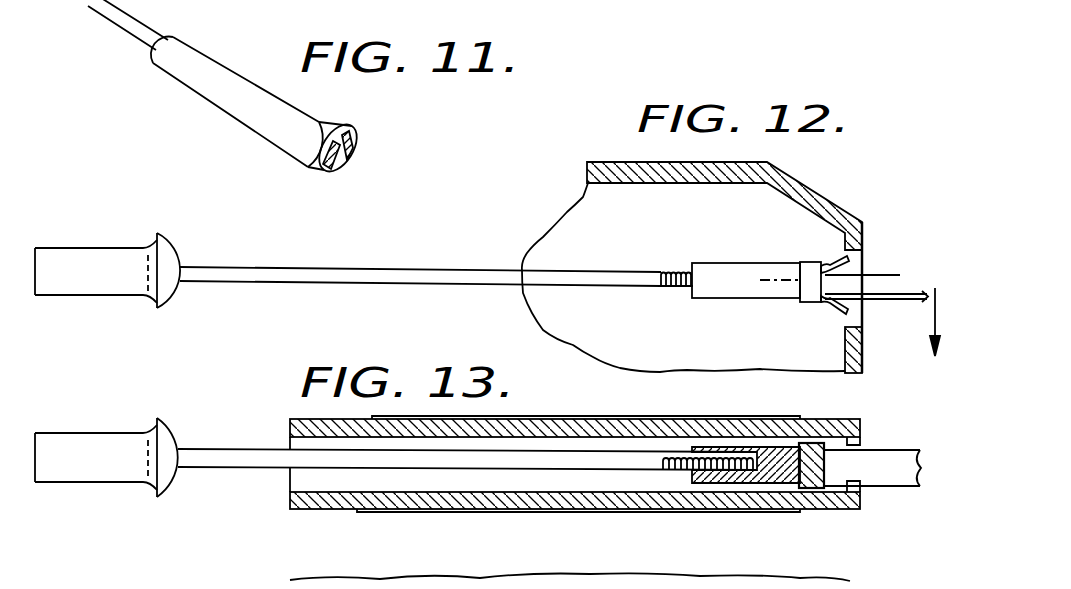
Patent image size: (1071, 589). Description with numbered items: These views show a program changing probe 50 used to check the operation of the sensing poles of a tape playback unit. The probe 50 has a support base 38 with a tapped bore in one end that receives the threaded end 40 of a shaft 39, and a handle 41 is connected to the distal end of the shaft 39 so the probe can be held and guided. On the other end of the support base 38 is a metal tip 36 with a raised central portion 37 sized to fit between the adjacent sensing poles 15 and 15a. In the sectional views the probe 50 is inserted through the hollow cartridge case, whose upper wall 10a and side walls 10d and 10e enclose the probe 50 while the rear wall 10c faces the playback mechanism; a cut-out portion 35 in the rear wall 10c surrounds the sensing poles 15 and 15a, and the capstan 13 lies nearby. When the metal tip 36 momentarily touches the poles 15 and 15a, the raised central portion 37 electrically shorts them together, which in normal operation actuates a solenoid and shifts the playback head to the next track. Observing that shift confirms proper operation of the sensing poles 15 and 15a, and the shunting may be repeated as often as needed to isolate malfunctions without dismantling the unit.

In FIG. 12, the upper wall 10a is at (602, 160).
In FIG. 12, the rear wall 10c is at (864, 370).
In FIG. 13, the side wall 10d is at (548, 514).
In FIG. 13, the side wall 10e is at (601, 417).
In FIG. 12, the capstan 13 is at (140, 270).
In FIG. 12, the sensing pole 15 is at (900, 275).
In FIG. 12, the sensing pole 15a is at (890, 300).
In FIG. 13, the sensing pole 15a is at (890, 478).
In FIG. 12, the cut-out portion 35 is at (865, 262).
In FIG. 11, the metal tip 36 is at (331, 138).
In FIG. 12, the metal tip 36 is at (807, 260).
In FIG. 13, the metal tip 36 is at (812, 489).
In FIG. 11, the raised central portion 37 is at (348, 186).
In FIG. 12, the raised central portion 37 is at (814, 303).
In FIG. 11, the support base 38 is at (221, 67).
In FIG. 12, the support base 38 is at (733, 300).
In FIG. 13, the support base 38 is at (767, 484).
In FIG. 11, the shaft 39 is at (110, 25).
In FIG. 12, the shaft 39 is at (398, 288).
In FIG. 13, the shaft 39 is at (236, 470).
In FIG. 12, the threaded end 40 is at (672, 270).
In FIG. 13, the threaded end 40 is at (708, 457).
In FIG. 12, the handle 41 is at (80, 248).
In FIG. 13, the handle 41 is at (77, 442).
In FIG. 11, the program changing probe 50 is at (228, 141).